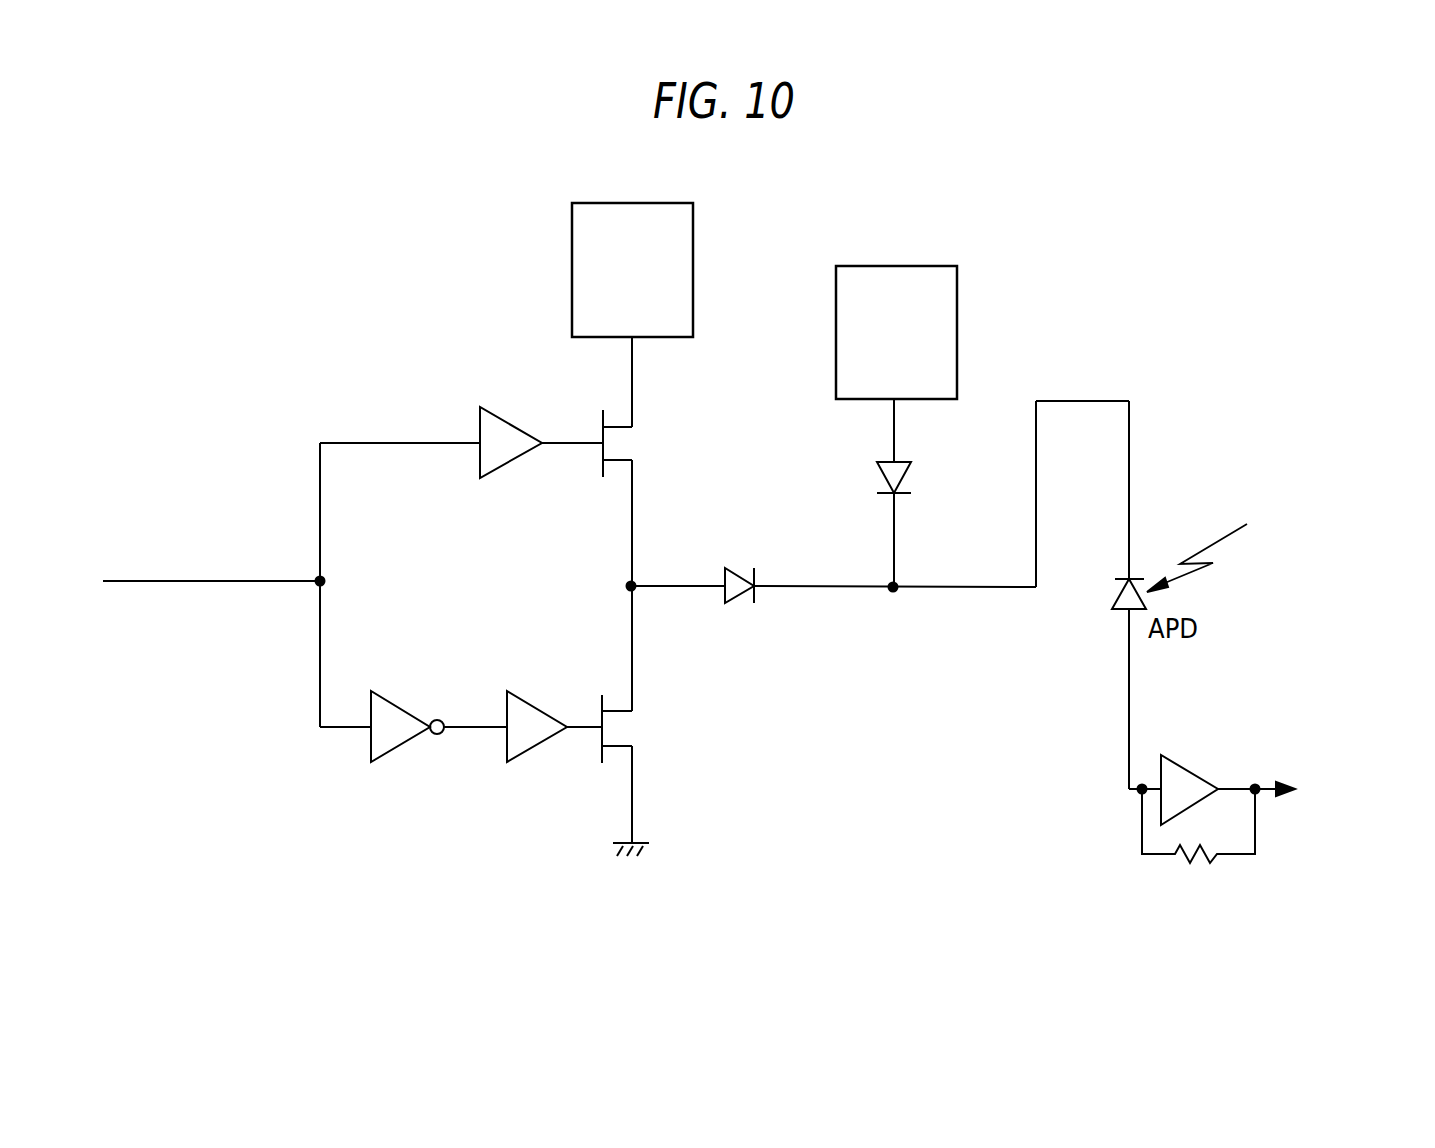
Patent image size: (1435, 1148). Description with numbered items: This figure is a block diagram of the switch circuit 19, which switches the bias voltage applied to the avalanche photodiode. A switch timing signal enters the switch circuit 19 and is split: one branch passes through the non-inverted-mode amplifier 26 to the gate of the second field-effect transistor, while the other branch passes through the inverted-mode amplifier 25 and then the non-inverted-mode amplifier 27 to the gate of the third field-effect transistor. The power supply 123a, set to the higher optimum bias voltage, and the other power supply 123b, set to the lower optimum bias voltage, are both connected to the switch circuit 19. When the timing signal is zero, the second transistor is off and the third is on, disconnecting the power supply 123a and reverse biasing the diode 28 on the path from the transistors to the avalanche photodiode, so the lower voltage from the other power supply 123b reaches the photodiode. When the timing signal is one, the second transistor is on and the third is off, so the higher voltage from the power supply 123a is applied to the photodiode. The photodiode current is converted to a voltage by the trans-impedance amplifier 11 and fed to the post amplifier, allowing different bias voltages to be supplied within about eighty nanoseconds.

The switch circuit 19 is at (495, 845).
The inverted-mode amplifier 25 is at (401, 709).
The non-inverted-mode amplifier 26 is at (510, 424).
The non-inverted-mode amplifier 27 is at (538, 710).
The diode 28 is at (745, 568).
The power supply 123a is at (693, 267).
The other power supply 123b is at (957, 328).
The trans-impedance amplifier 11 is at (1190, 772).